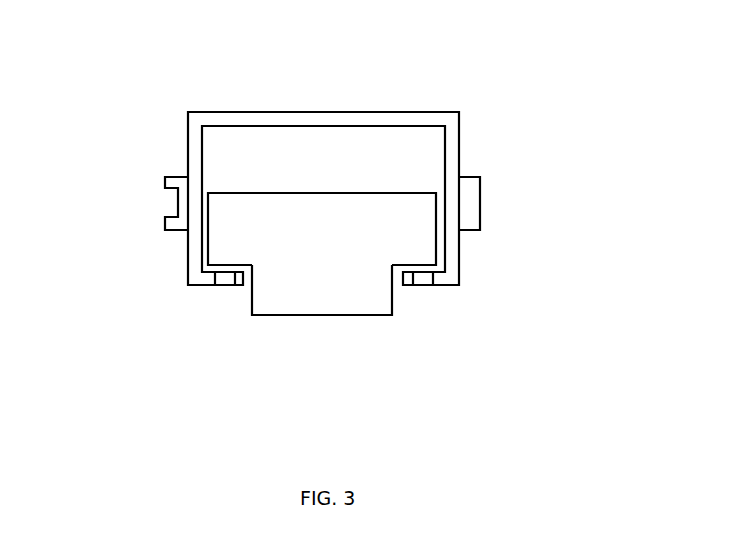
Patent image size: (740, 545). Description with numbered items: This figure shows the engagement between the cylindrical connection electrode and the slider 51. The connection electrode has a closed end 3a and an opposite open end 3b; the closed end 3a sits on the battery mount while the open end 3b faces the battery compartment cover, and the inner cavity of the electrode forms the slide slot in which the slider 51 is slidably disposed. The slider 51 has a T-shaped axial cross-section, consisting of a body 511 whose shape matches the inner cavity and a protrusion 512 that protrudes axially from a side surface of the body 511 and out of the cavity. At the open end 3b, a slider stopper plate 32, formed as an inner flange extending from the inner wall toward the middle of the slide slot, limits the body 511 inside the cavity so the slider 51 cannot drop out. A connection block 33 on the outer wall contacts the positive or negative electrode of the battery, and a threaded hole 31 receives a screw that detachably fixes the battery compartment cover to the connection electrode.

The closed end 3a is at (355, 112).
The open end 3b is at (452, 287).
The connection block 33 is at (167, 181).
The slider stopper plate 32 is at (212, 277).
The threaded hole 31 is at (425, 277).
The slider 51 is at (322, 323).
The body 511 is at (285, 235).
The protrusion 512 is at (345, 298).